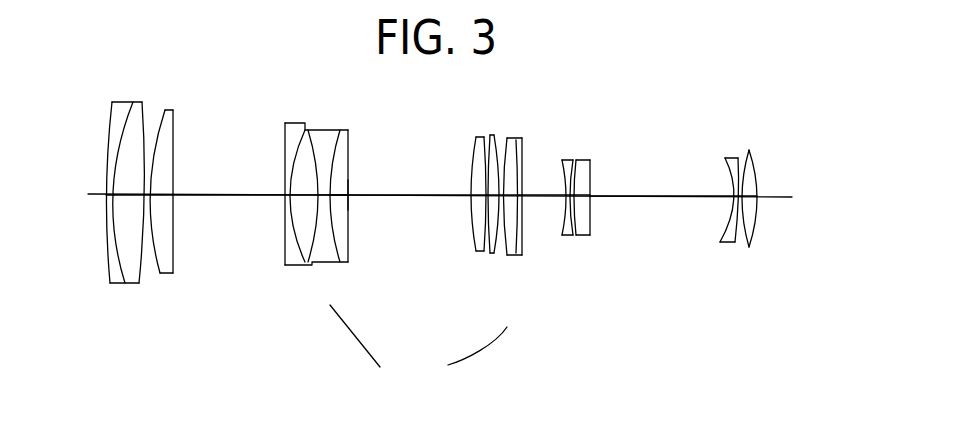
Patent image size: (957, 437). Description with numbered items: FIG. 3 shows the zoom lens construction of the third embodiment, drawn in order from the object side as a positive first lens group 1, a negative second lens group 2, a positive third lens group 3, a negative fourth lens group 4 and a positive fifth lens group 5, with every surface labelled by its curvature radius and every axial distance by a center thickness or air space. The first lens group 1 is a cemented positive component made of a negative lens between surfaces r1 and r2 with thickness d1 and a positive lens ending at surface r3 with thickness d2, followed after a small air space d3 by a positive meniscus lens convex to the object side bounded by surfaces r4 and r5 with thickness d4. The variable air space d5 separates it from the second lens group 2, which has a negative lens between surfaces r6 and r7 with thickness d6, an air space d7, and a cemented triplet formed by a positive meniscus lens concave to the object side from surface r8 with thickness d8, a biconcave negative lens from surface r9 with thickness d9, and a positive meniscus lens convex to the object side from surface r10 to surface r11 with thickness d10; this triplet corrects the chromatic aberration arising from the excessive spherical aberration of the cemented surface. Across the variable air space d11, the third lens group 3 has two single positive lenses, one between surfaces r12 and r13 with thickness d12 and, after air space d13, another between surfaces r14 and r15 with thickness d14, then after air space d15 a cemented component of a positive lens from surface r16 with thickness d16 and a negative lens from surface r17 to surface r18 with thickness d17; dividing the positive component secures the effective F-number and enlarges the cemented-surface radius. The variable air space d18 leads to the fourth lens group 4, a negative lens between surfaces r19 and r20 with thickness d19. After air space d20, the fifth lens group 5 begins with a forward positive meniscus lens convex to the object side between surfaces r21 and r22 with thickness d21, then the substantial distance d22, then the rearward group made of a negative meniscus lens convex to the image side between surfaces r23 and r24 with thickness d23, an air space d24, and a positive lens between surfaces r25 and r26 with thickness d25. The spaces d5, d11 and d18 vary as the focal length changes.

The first lens group 1 is at (185, 100).
The second lens group 2 is at (357, 118).
The third lens group 3 is at (453, 120).
The fourth lens group 4 is at (580, 122).
The fifth lens group 5 is at (768, 123).
The curvature radius of first lens surface r1 is at (107, 277).
The curvature radius of second lens surface r2 is at (125, 275).
The curvature radius of third lens surface r3 is at (140, 278).
The curvature radius of fourth lens surface r4 is at (160, 275).
The curvature radius of fifth lens surface r5 is at (173, 275).
The curvature radius of sixth lens surface r6 is at (284, 255).
The curvature radius of seventh lens surface r7 is at (300, 256).
The curvature radius of eighth lens surface r8 is at (308, 254).
The curvature radius of ninth lens surface r9 is at (316, 250).
The curvature radius of tenth lens surface r10 is at (335, 250).
The curvature radius of eleventh lens surface r11 is at (348, 250).
The curvature radius of twelfth lens surface r12 is at (476, 254).
The curvature radius of thirteenth lens surface r13 is at (482, 255).
The curvature radius of fourteenth lens surface r14 is at (490, 255).
The curvature radius of fifteenth lens surface r15 is at (497, 256).
The curvature radius of sixteenth lens surface r16 is at (507, 257).
The curvature radius of seventeenth lens surface r17 is at (518, 257).
The curvature radius of eighteenth lens surface r18 is at (522, 256).
The curvature radius of nineteenth lens surface r19 is at (566, 238).
The curvature radius of twentieth lens surface r20 is at (573, 238).
The curvature radius of twenty-first lens surface r21 is at (578, 240).
The curvature radius of twenty-second lens surface r22 is at (590, 237).
The curvature radius of twenty-third lens surface r23 is at (722, 235).
The curvature radius of twenty-fourth lens surface r24 is at (735, 244).
The curvature radius of twenty-fifth lens surface r25 is at (746, 242).
The curvature radius of twenty-sixth lens surface r26 is at (755, 236).
The center thickness of first lens d1 is at (110, 186).
The center thickness of second lens d2 is at (130, 183).
The air space between first cemented component and meniscus lens d3 is at (145, 178).
The center thickness of positive meniscus lens d4 is at (164, 183).
The air space between first and second lens groups d5 is at (240, 195).
The center thickness of second-group negative lens d6 is at (286, 192).
The air space within second lens group d7 is at (306, 186).
The center thickness of positive meniscus lens concave to object side d8 is at (321, 198).
The center thickness of biconcave negative lens d9 is at (330, 200).
The center thickness of positive meniscus lens convex to object side d10 is at (340, 192).
The air space between second and third lens groups d11 is at (385, 197).
The center thickness of first single positive lens d12 is at (473, 192).
The air space between the single positive lenses d13 is at (483, 198).
The center thickness of second single positive lens d14 is at (489, 146).
The air space before cemented component of third group d15 is at (500, 146).
The center thickness of cemented positive lens d16 is at (513, 192).
The center thickness of cemented negative lens d17 is at (515, 198).
The air space between third and fourth lens groups d18 is at (560, 197).
The center thickness of fourth-group negative lens d19 is at (560, 130).
The air space between fourth and fifth lens groups d20 is at (580, 192).
The center thickness of forward positive meniscus lens d21 is at (585, 200).
The air space between forward and rearward groups d22 is at (640, 188).
The center thickness of rearward negative meniscus lens d23 is at (736, 188).
The air space within rearward group d24 is at (737, 158).
The center thickness of rearward positive lens d25 is at (753, 195).